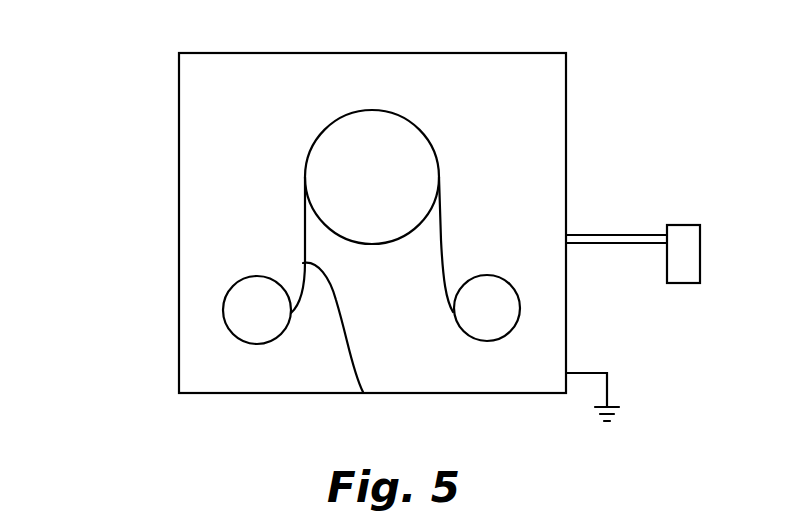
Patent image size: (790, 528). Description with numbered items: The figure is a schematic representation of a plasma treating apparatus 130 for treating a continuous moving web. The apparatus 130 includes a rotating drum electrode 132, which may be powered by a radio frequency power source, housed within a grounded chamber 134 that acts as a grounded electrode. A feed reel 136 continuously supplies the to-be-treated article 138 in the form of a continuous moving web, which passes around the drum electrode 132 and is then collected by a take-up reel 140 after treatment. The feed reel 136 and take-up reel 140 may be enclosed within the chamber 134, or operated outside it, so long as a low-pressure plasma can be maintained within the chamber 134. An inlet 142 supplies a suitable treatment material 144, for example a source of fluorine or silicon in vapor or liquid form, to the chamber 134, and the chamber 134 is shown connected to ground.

The apparatus 130 is at (118, 188).
The rotating drum electrode 132 is at (360, 133).
The grounded chamber 134 is at (565, 130).
The feed reel 136 is at (262, 318).
The to-be-treated article 138 is at (363, 392).
The take-up reel 140 is at (502, 308).
The inlet 142 is at (607, 233).
The treatment material 144 is at (683, 283).